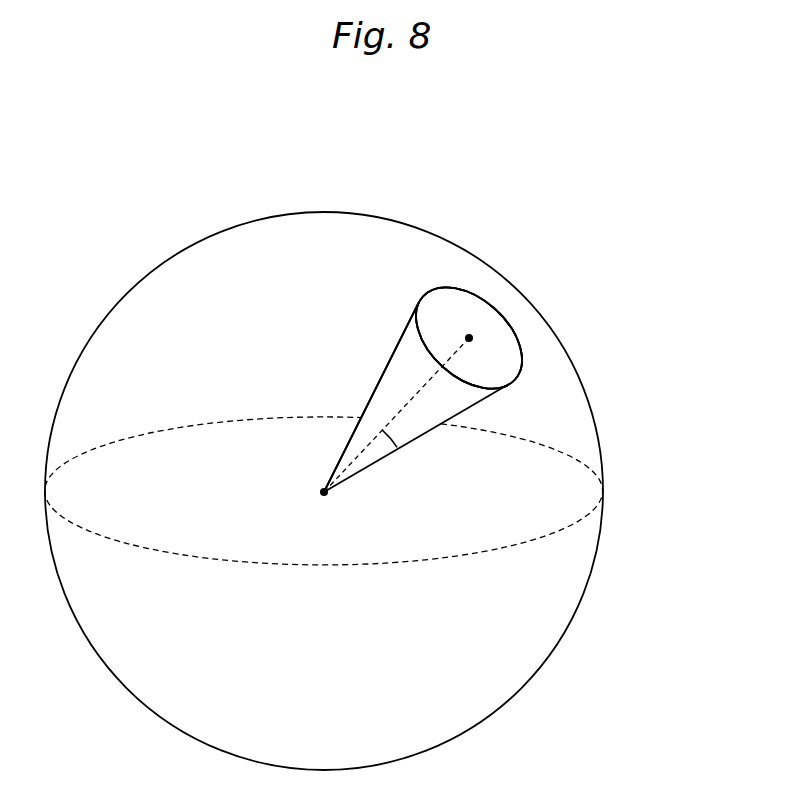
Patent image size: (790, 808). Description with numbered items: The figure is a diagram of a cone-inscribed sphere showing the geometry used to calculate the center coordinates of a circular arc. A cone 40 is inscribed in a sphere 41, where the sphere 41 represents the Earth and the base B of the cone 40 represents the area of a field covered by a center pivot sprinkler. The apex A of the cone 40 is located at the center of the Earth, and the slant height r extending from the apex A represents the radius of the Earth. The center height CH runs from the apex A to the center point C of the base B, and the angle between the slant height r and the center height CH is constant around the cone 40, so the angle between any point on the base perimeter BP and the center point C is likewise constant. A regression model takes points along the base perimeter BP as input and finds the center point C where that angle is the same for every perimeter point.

The sphere 41 is at (125, 297).
The cone 40 is at (378, 403).
The slant height r is at (392, 358).
The apex A is at (324, 492).
The center point C is at (469, 338).
The center height CH is at (410, 403).
The base B is at (433, 322).
The base perimeter BP is at (488, 300).